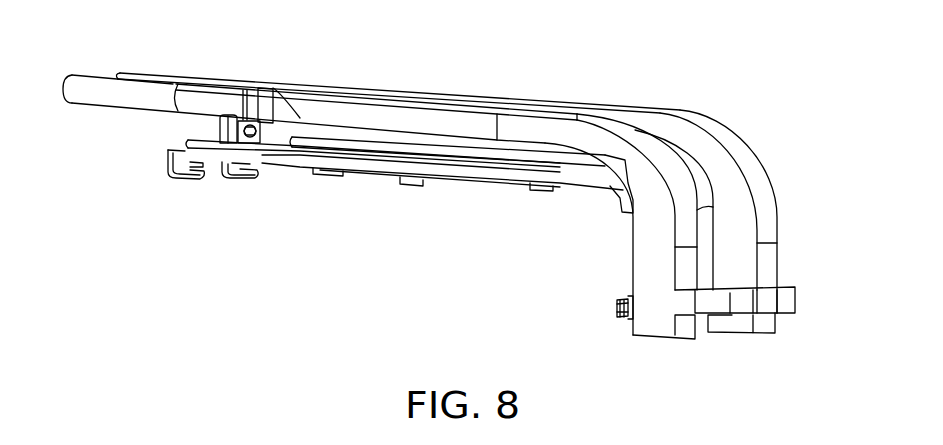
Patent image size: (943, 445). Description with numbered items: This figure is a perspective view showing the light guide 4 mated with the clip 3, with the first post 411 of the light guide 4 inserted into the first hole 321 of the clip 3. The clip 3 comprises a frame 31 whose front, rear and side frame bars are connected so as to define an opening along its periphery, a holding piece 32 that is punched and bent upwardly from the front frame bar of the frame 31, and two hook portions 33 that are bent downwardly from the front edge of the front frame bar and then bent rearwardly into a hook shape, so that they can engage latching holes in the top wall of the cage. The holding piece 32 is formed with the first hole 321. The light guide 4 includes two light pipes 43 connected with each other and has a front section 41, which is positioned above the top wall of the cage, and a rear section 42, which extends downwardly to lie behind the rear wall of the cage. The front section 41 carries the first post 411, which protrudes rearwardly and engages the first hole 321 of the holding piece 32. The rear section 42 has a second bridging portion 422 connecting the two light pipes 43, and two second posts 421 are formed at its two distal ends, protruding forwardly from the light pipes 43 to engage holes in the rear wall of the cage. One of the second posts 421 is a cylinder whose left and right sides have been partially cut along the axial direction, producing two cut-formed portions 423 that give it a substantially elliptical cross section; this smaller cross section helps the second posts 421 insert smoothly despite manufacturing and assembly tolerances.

The clip 3 is at (386, 135).
The frame 31 is at (370, 173).
The holding piece 32 is at (233, 120).
The first hole 321 is at (243, 118).
The hook portions 33 is at (175, 182).
The light guide 4 is at (442, 212).
The front section 41 is at (342, 82).
The first post 411 is at (265, 120).
The rear section 42 is at (671, 244).
The second posts 421 is at (618, 298).
The second bridging portion 422 is at (717, 303).
The cut-formed portions 423 is at (612, 303).
The light pipes 43 is at (748, 168).